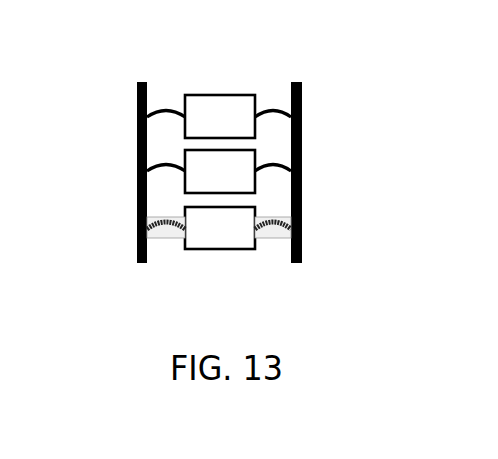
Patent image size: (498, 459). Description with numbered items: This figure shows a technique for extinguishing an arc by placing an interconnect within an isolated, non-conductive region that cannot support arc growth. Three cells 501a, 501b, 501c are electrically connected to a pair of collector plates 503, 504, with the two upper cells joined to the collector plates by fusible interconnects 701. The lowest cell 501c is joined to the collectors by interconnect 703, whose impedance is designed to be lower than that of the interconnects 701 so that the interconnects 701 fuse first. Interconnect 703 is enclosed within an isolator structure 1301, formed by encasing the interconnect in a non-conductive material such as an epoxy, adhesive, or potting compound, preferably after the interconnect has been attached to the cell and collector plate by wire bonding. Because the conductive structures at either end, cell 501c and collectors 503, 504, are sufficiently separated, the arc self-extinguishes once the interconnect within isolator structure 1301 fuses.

The collector plate 503 is at (137, 118).
The collector plate 504 is at (303, 115).
The cell 501a is at (233, 95).
The cell 501b is at (257, 150).
The cell 501c is at (232, 249).
The fusible interconnect 701 is at (163, 108).
The interconnect 703 is at (155, 227).
The isolator structure 1301 is at (160, 238).